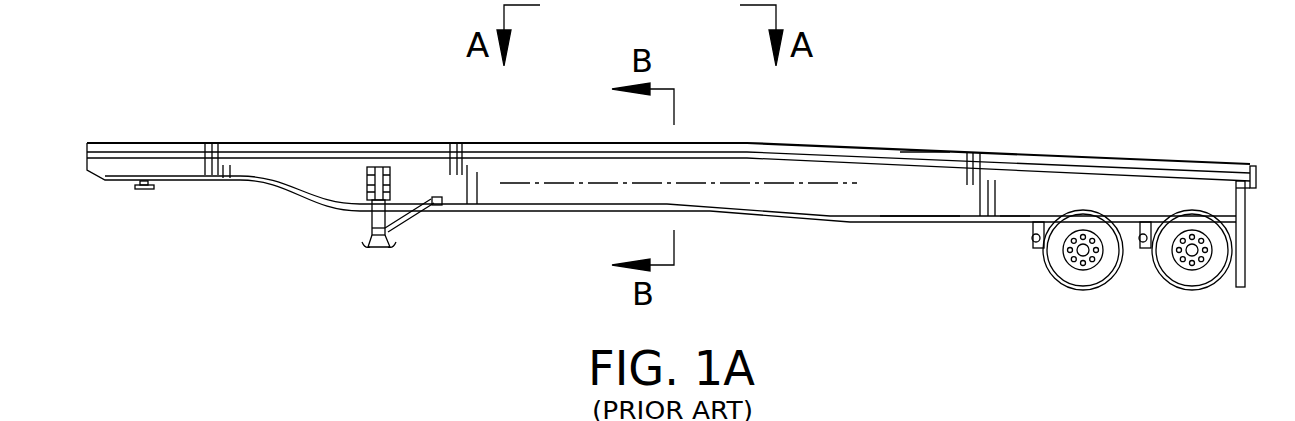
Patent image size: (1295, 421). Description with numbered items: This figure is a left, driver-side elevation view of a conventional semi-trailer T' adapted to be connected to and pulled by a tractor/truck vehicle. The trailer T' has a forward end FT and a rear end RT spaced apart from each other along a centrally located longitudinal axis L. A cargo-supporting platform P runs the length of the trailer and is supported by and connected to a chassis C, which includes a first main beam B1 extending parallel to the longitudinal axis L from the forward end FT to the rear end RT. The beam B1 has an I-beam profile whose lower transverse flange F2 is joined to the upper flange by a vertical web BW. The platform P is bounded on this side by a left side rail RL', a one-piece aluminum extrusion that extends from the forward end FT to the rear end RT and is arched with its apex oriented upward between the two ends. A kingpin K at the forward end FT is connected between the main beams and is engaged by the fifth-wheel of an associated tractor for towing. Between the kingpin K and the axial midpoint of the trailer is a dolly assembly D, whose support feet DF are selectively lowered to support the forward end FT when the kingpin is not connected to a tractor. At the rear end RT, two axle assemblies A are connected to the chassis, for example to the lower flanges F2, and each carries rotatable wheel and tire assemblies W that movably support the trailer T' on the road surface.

The forward end FT is at (136, 130).
The cargo-supporting platform P is at (283, 130).
The left side rail RL' is at (475, 187).
The kingpin K is at (142, 191).
The dolly assembly D is at (400, 240).
The support feet DF is at (375, 250).
The longitudinal axis L is at (630, 185).
The lower transverse flange F2 is at (850, 222).
The vertical web BW is at (920, 200).
The chassis C is at (966, 242).
The first main beam B1 is at (1015, 200).
The wheel and tire assembly W is at (1055, 282).
The axle assembly A is at (1088, 300).
The semi-trailer T' is at (980, 90).
The rear end RT is at (1190, 148).